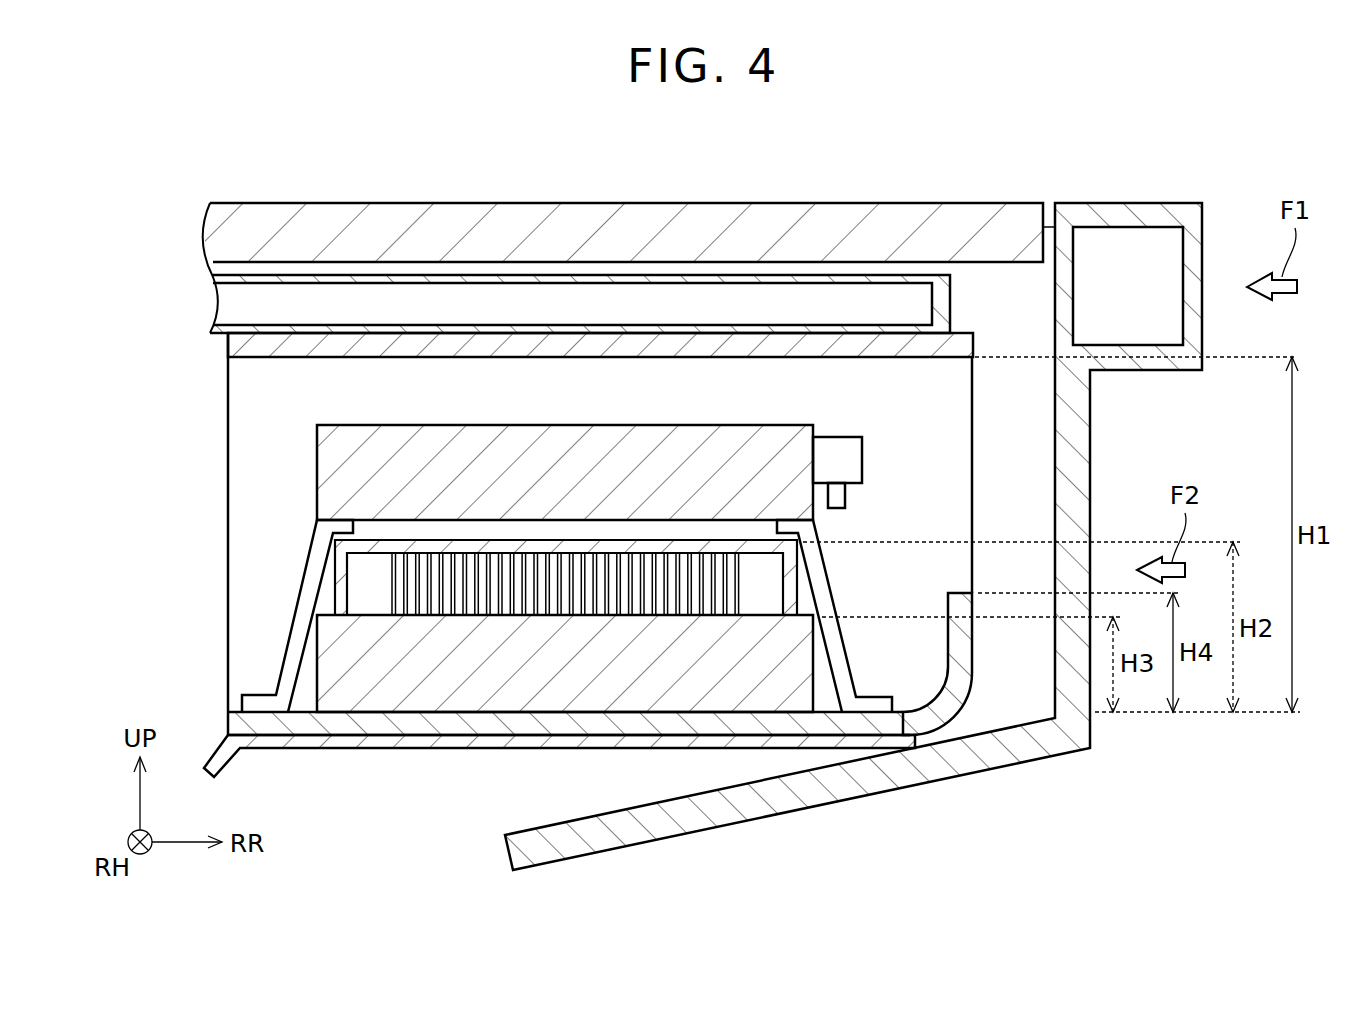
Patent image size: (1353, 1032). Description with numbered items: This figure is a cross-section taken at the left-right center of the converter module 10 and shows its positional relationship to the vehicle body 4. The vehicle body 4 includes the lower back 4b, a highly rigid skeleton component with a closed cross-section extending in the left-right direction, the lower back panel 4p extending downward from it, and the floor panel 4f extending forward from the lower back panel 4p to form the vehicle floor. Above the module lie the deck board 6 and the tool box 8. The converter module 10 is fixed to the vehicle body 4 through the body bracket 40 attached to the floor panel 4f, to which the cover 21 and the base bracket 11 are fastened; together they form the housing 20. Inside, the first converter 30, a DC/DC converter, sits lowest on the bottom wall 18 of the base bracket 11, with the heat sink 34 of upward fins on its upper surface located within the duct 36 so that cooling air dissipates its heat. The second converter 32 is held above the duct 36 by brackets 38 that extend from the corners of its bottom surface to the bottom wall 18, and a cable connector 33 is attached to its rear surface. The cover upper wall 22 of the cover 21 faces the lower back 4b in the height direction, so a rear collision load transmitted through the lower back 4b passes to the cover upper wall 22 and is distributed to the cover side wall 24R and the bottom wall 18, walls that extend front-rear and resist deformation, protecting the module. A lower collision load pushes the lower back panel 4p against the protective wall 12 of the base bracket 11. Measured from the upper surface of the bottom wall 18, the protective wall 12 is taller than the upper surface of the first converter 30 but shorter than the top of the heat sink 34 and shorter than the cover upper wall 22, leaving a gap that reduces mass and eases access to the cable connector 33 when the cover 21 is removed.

The vehicle body 4 is at (894, 510).
The lower back 4b is at (1193, 310).
The lower back panel 4p is at (1080, 448).
The floor panel 4f is at (662, 827).
The deck board 6 is at (450, 217).
The tool box 8 is at (520, 293).
The converter module 10 is at (980, 688).
The base bracket 11 is at (130, 333).
The protective wall 12 is at (960, 663).
The bottom wall 18 is at (773, 722).
The housing 20 is at (524, 534).
The cover 21 is at (554, 434).
The cover upper wall 22 is at (258, 336).
The cover side wall 24R is at (252, 484).
The first converter 30 is at (467, 700).
The second converter 32 is at (575, 440).
The cable connector 33 is at (862, 460).
The heat sink 34 is at (530, 610).
The duct 36 is at (353, 553).
The bracket 38 is at (302, 612).
The body bracket 40 is at (222, 752).